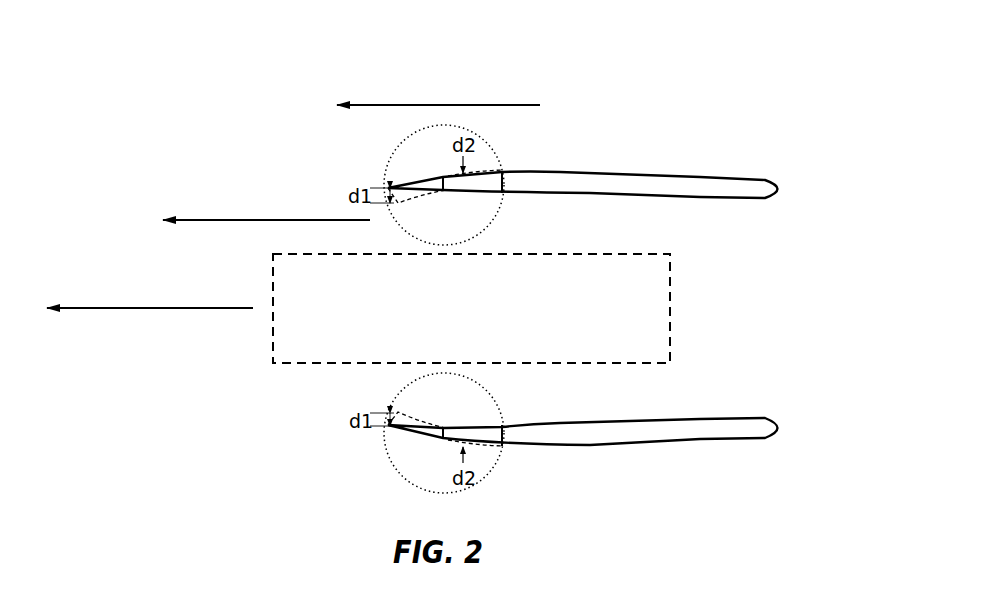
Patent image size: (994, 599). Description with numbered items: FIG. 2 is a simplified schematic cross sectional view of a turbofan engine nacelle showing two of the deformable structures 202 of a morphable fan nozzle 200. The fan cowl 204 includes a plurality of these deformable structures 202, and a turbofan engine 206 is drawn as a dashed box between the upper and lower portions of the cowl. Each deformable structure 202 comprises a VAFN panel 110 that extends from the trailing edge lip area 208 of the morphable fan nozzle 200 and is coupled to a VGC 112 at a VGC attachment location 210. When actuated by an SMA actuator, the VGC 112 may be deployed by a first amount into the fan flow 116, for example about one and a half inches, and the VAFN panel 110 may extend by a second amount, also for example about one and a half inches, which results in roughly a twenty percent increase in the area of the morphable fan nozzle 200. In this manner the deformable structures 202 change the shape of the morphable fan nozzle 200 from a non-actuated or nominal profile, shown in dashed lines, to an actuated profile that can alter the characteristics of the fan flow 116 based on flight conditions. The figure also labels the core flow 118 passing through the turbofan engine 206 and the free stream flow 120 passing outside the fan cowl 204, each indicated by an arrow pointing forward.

The morphable fan nozzle 200 is at (228, 112).
The deformable structure 202 is at (386, 160).
The fan cowl 204 is at (748, 178).
The turbofan engine 206 is at (670, 272).
The trailing edge lip area 208 is at (505, 193).
The VGC attachment location 210 is at (443, 191).
The VAFN panel 110 is at (477, 181).
The VGC 112 is at (407, 185).
The fan flow 116 is at (190, 218).
The core flow 118 is at (208, 310).
The free stream flow 120 is at (540, 105).